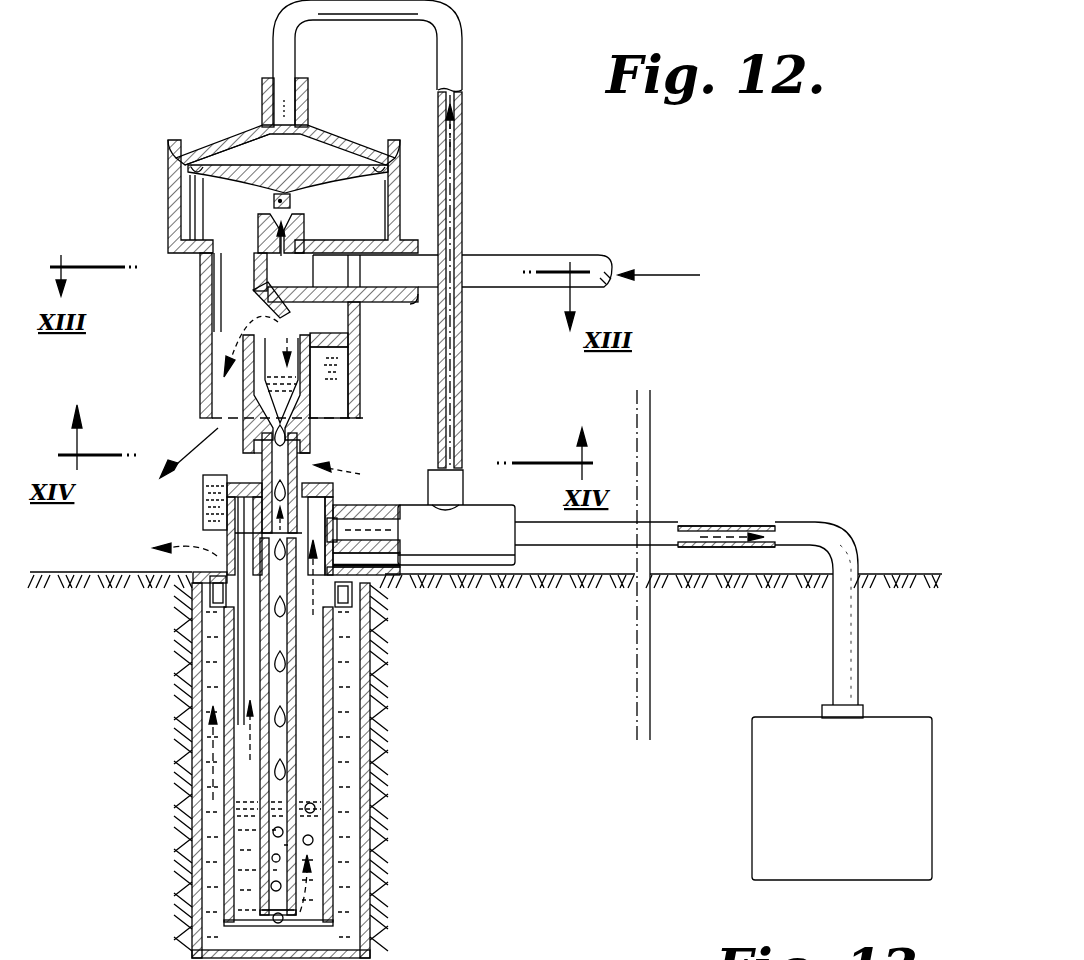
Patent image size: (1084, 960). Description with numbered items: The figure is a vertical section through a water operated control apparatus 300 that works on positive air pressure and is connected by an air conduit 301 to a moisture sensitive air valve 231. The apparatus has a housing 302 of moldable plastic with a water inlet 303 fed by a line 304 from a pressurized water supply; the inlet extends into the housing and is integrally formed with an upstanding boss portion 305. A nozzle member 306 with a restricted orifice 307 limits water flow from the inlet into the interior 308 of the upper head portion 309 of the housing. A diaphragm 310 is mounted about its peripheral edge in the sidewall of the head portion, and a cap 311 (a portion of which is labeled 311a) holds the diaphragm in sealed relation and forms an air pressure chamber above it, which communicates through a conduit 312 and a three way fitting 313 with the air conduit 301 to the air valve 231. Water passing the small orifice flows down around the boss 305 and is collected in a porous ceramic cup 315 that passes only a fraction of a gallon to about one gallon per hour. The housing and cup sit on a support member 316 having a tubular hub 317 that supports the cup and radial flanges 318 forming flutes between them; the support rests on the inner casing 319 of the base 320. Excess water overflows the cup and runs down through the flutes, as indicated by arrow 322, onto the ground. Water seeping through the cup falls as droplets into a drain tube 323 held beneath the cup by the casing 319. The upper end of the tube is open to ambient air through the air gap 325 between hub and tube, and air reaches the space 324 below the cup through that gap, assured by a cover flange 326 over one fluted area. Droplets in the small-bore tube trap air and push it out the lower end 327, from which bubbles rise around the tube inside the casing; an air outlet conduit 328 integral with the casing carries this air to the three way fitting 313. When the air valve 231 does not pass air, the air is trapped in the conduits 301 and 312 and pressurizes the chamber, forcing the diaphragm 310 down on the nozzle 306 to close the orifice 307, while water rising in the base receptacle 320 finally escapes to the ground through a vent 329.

The water operated control apparatus 300 is at (140, 158).
The air conduit 301 is at (812, 537).
The housing 302 is at (202, 323).
The water inlet 303 is at (412, 301).
The line 304 is at (592, 258).
The upstanding boss portion 305 is at (258, 263).
The nozzle member 306 is at (262, 211).
The restricted orifice 307 is at (266, 201).
The interior of the upper head portion 308 is at (462, 178).
The upper head portion 309 is at (402, 216).
The diaphragm 310 is at (247, 174).
The cap 311 is at (343, 134).
The inner surface of cap 311a is at (270, 153).
The conduit 312 is at (452, 39).
The three way fitting 313 is at (485, 548).
The ceramic cup 315 is at (258, 385).
The support member 316 is at (208, 518).
The tubular hub 317 is at (310, 402).
The radial flanges 318 is at (215, 481).
The inner casing 319 is at (360, 480).
The base 320 is at (370, 862).
The arrow 322 is at (192, 465).
The drain tube 323 is at (292, 768).
The space 324 is at (300, 426).
The air gap 325 is at (302, 447).
The cover flange 326 is at (348, 338).
The lower end of drain tube 327 is at (262, 898).
The air outlet conduit 328 is at (370, 556).
The vent 329 is at (221, 607).
The moisture sensitive air valve 231 is at (790, 812).